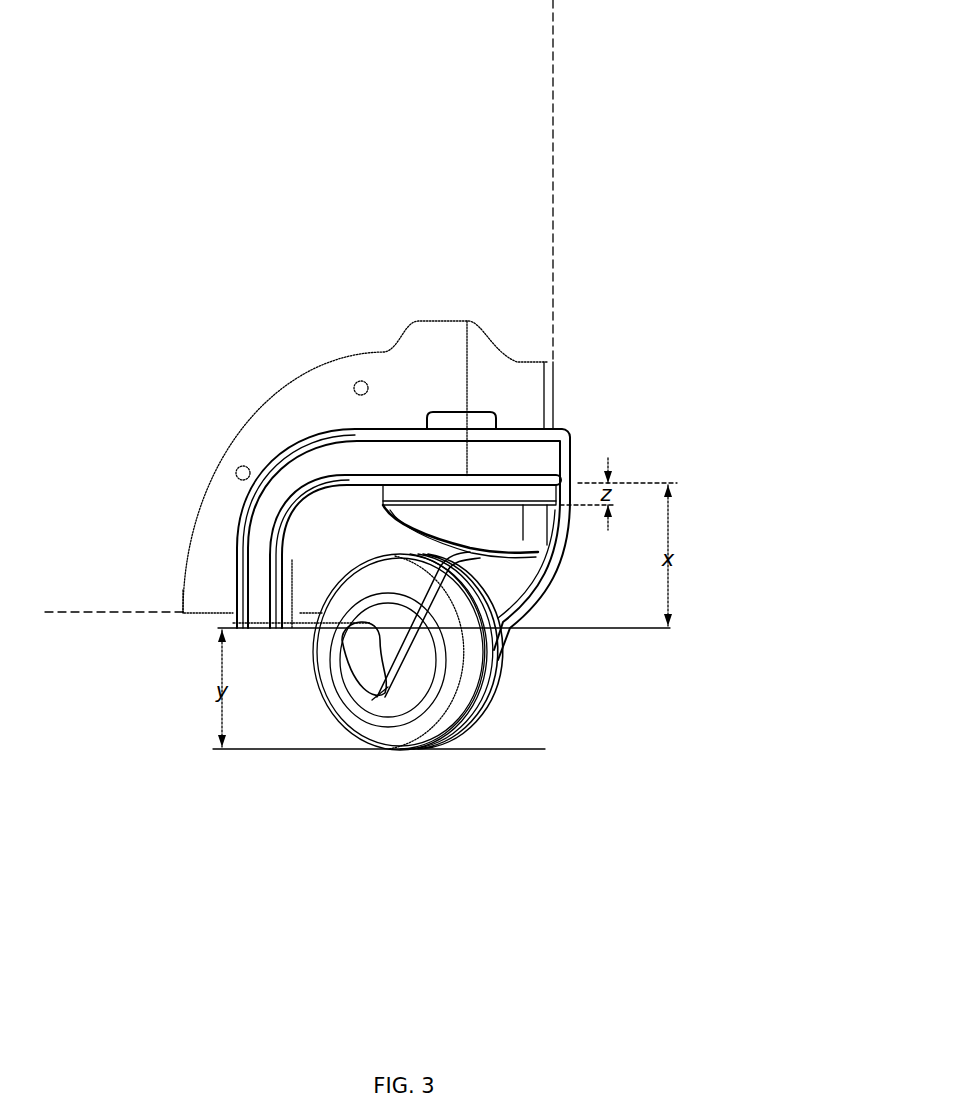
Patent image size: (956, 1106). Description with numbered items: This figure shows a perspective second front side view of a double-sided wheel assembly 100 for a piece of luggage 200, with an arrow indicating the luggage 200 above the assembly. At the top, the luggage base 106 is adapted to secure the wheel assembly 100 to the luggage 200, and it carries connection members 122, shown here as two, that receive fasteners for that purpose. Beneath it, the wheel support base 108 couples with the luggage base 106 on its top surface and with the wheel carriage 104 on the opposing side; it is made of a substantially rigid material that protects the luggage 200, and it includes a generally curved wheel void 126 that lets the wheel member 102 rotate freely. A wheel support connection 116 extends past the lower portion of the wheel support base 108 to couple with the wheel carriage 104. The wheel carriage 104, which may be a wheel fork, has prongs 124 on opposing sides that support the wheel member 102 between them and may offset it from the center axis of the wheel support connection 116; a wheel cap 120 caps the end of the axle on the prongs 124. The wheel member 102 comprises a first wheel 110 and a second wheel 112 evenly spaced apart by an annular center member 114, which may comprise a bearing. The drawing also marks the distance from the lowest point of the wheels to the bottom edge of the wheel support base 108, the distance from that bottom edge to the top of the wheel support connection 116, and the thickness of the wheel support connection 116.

The double-sided wheel assembly 100 is at (640, 298).
The wheel member 102 is at (538, 698).
The wheel carriage 104 is at (372, 536).
The luggage base 106 is at (510, 395).
The wheel support base 108 is at (305, 477).
The first wheel 110 is at (385, 735).
The second wheel 112 is at (492, 718).
The center member 114 is at (454, 742).
The wheel support connection 116 is at (542, 485).
The wheel cap 120 is at (350, 655).
The connection members 122 is at (240, 470).
The prongs 124 is at (388, 584).
The wheel void 126 is at (322, 511).
The luggage 200 is at (414, 174).